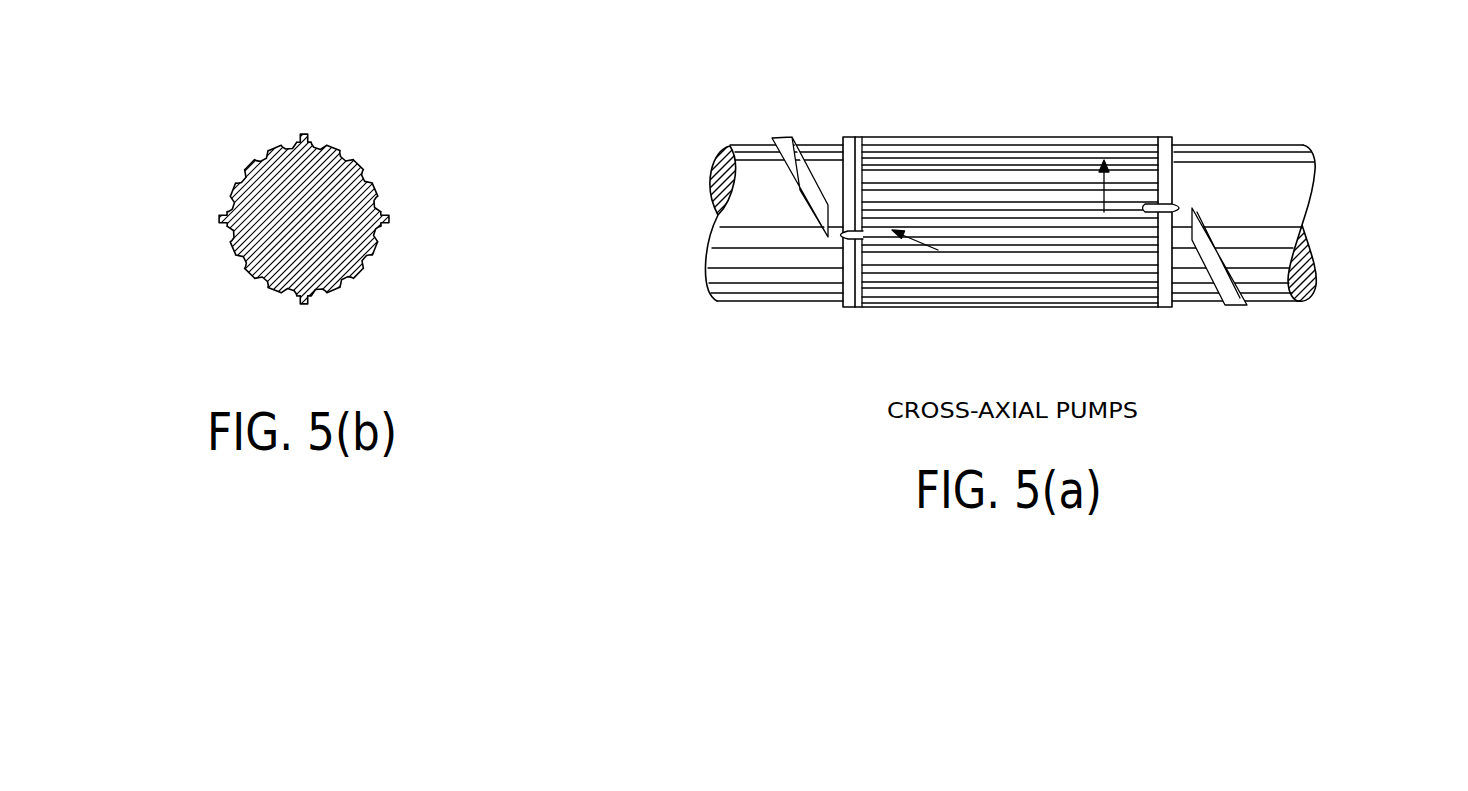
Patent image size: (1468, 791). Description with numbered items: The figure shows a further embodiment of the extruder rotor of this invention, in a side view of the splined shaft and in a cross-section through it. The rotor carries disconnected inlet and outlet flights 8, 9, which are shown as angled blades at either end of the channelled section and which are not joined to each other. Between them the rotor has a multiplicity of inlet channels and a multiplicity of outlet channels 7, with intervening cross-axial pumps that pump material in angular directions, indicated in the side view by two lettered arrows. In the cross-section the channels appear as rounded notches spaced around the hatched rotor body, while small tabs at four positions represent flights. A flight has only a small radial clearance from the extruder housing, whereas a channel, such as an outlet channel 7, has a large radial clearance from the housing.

The outlet channel 7 is at (318, 142).
The inlet flight 8 is at (1220, 282).
The outlet flight 9 is at (810, 178).